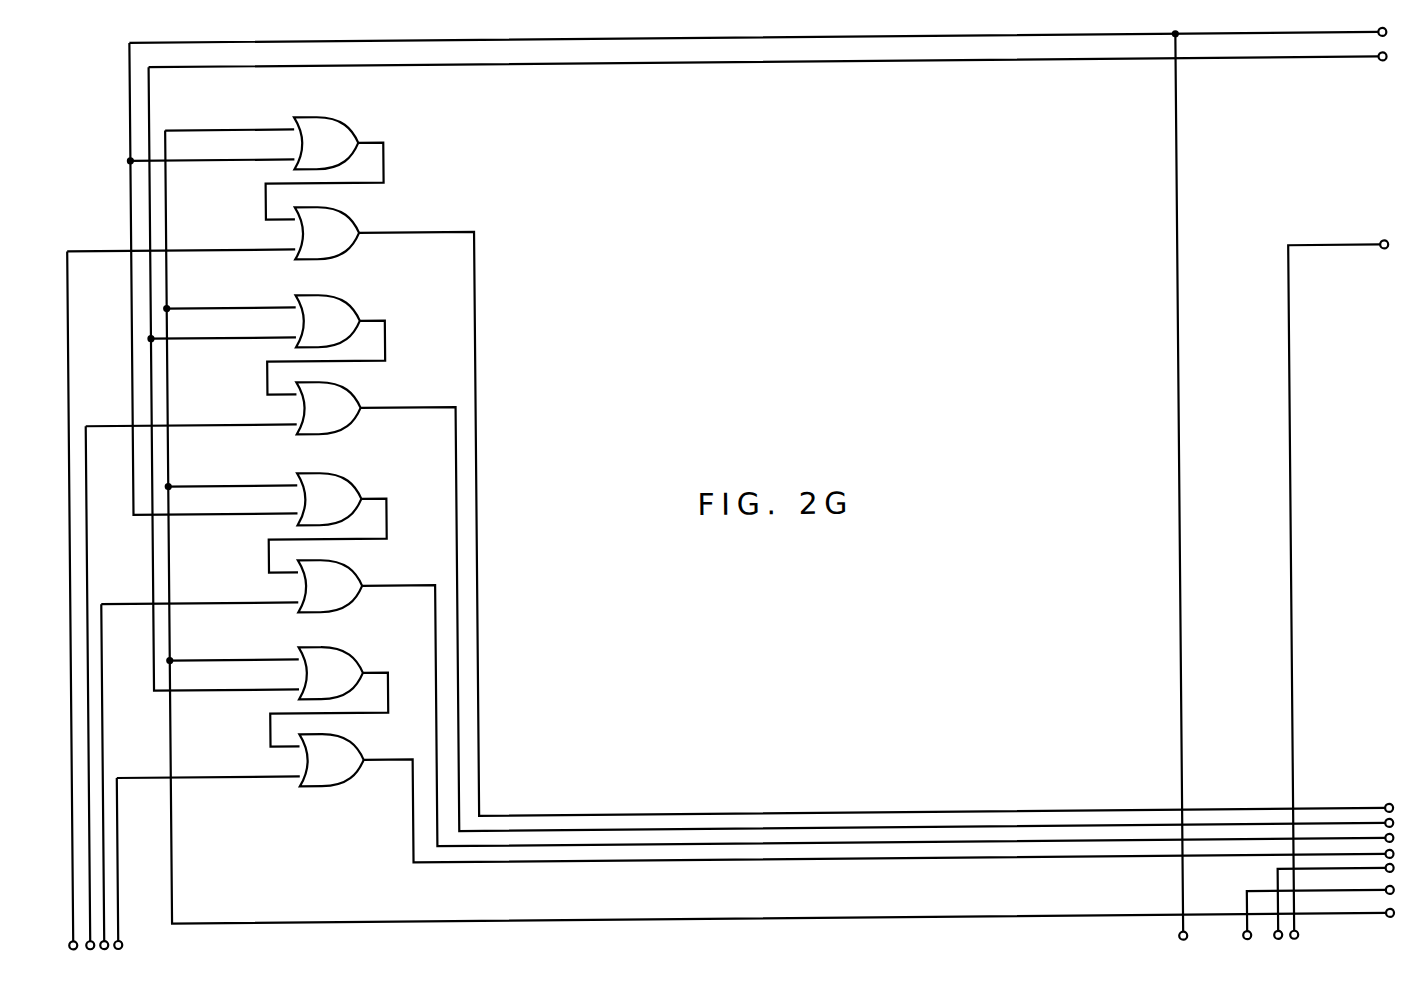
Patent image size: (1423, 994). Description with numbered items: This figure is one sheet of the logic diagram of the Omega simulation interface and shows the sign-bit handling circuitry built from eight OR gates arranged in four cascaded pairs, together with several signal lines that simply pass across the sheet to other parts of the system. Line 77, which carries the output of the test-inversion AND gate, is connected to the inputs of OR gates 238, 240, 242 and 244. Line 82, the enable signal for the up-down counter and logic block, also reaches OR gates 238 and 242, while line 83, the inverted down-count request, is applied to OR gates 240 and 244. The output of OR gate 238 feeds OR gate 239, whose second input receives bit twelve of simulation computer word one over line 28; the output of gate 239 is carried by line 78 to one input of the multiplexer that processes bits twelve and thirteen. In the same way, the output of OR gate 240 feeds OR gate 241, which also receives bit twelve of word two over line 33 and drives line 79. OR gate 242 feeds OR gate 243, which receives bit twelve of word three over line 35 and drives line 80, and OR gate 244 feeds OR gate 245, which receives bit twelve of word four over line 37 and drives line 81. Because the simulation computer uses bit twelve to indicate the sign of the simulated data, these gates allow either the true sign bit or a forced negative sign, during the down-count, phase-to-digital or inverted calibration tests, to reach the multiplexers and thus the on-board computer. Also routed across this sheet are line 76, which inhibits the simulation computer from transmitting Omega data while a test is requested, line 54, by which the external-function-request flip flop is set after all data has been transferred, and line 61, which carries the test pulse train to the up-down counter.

The OR gate 238 is at (344, 143).
The OR gate 239 is at (344, 233).
The OR gate 240 is at (344, 321).
The OR gate 241 is at (344, 408).
The OR gate 242 is at (344, 499).
The OR gate 243 is at (344, 586).
The OR gate 244 is at (344, 673).
The OR gate 245 is at (344, 760).
The line 77 is at (249, 130).
The line 82 is at (249, 160).
The line 83 is at (249, 338).
The line 28 is at (249, 250).
The line 33 is at (249, 425).
The line 35 is at (249, 603).
The line 37 is at (249, 777).
The line 78 is at (466, 234).
The line 79 is at (424, 415).
The line 80 is at (407, 593).
The line 81 is at (390, 767).
The line 76 is at (1338, 895).
The line 54 is at (1230, 940).
The line 61 is at (1382, 249).